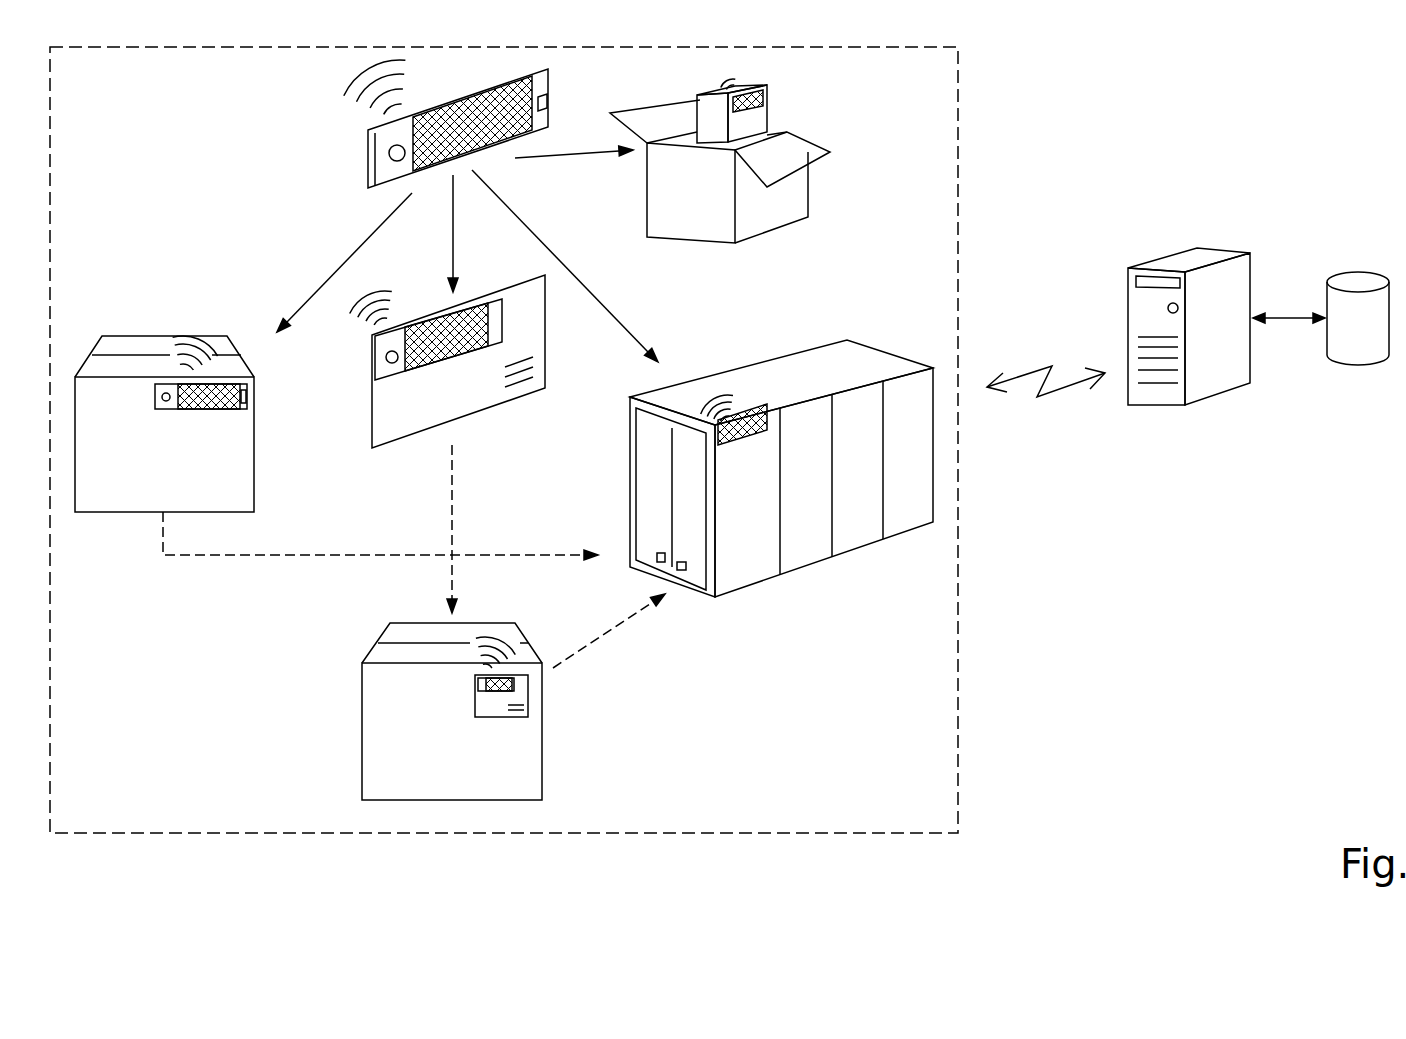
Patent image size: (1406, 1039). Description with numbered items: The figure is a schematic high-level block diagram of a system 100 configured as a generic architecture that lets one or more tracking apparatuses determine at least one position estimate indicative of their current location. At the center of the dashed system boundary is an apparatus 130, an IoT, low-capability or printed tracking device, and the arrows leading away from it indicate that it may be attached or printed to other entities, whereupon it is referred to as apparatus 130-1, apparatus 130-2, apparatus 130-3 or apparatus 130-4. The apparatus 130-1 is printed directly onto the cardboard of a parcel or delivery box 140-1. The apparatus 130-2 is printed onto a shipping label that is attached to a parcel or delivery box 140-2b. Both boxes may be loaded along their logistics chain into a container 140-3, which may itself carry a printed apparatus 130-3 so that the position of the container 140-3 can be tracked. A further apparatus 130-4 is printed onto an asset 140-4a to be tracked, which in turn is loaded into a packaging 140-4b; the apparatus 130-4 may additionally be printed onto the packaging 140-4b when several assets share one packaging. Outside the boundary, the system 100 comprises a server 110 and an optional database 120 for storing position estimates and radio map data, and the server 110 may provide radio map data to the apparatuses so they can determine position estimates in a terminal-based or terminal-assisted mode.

The system 100 is at (1182, 710).
The server 110 is at (1218, 250).
The database 120 is at (1362, 270).
The apparatus 130 is at (367, 142).
The apparatus 130-1 is at (190, 412).
The apparatus 130-2 is at (415, 370).
The apparatus 130-3 is at (748, 417).
The apparatus 130-4 is at (765, 100).
The parcel or delivery box 140-1 is at (245, 482).
The parcel or delivery box 140-2b is at (535, 745).
The container 140-3 is at (808, 555).
The asset to be tracked 140-4a is at (763, 112).
The packaging 140-4b is at (805, 192).